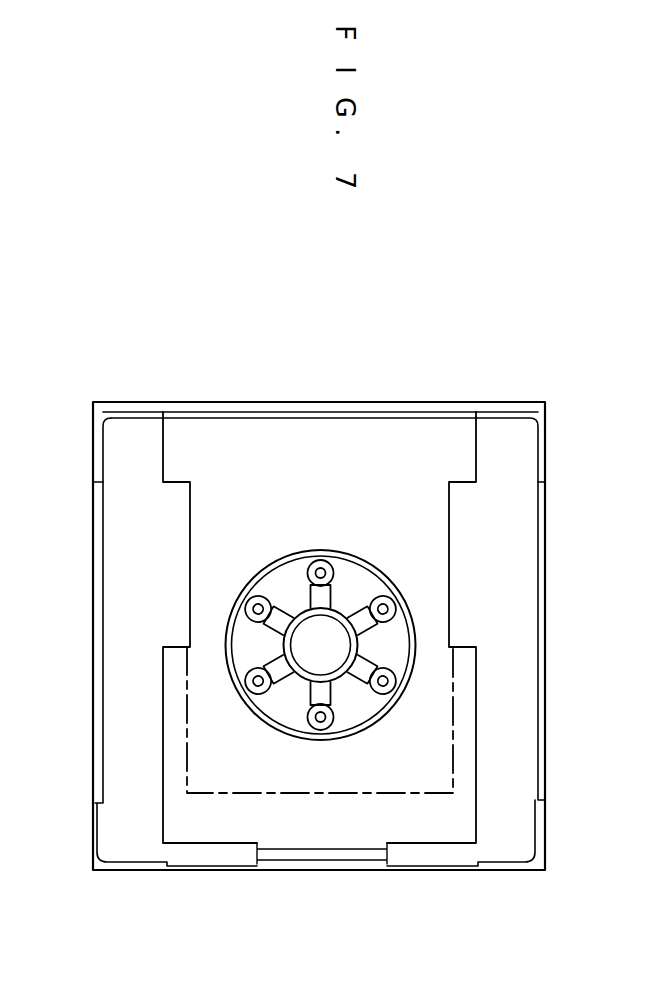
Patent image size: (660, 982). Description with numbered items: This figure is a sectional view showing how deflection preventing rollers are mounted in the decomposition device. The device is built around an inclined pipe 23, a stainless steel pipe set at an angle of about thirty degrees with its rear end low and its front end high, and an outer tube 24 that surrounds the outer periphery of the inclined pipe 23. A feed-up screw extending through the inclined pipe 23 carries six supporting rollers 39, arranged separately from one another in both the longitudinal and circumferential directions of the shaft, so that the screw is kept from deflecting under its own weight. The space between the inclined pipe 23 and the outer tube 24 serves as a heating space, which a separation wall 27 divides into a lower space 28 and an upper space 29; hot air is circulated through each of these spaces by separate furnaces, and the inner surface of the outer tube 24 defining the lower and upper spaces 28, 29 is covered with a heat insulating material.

The inclined pipe 23 is at (357, 561).
The outer tube 24 is at (546, 553).
The separation wall 27 is at (477, 741).
The lower space 28 is at (295, 452).
The upper space 29 is at (319, 638).
The supporting rollers 39 is at (262, 600).